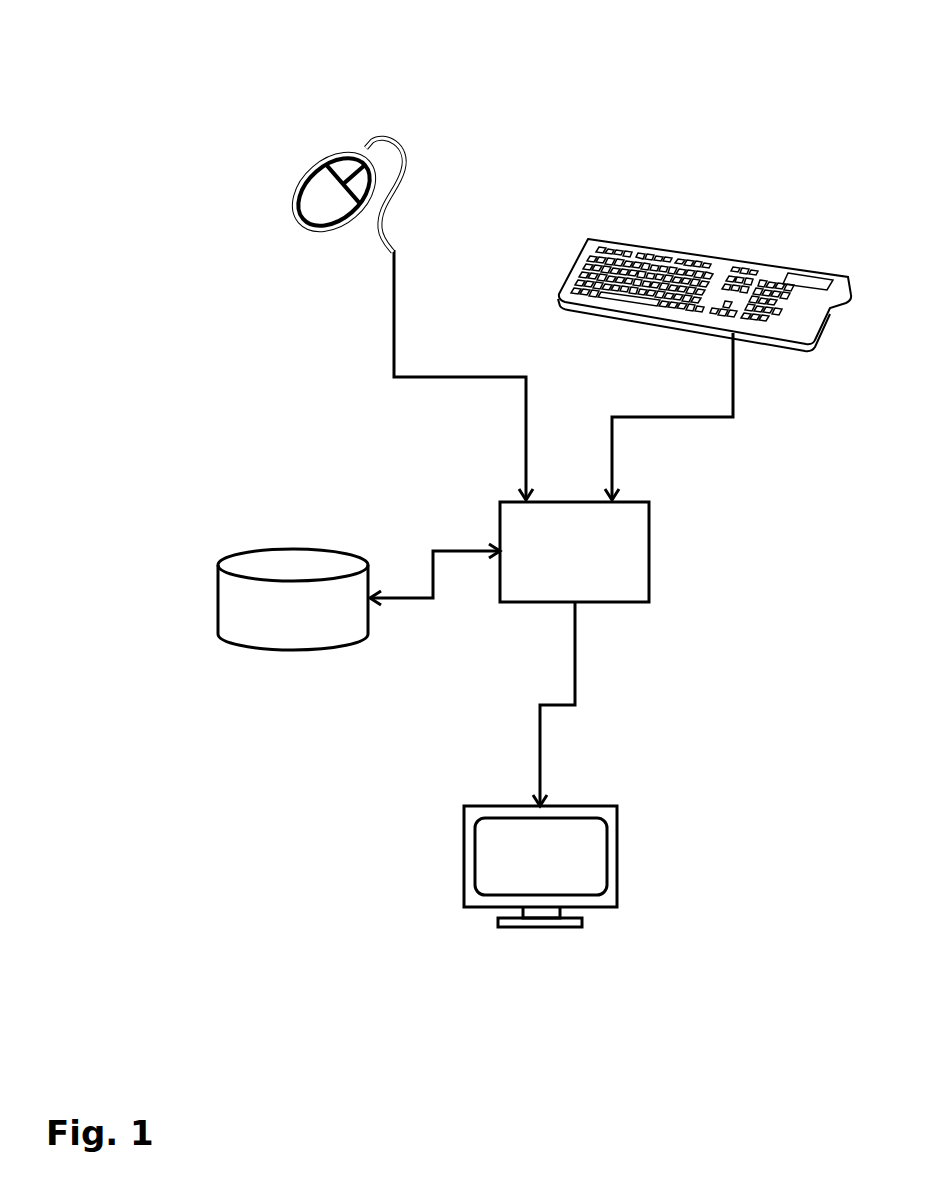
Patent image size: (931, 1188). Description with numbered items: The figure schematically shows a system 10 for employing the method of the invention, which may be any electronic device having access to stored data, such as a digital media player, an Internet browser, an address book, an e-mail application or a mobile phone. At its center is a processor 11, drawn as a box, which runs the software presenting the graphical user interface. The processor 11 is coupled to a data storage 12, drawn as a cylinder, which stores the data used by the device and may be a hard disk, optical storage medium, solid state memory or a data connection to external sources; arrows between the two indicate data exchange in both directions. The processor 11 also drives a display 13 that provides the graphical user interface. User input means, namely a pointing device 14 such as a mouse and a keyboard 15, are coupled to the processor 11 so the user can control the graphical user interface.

The system 10 is at (803, 53).
The processor 11 is at (649, 551).
The data storage 12 is at (218, 600).
The display 13 is at (464, 857).
The pointing device 14 is at (293, 165).
The keyboard 15 is at (693, 250).